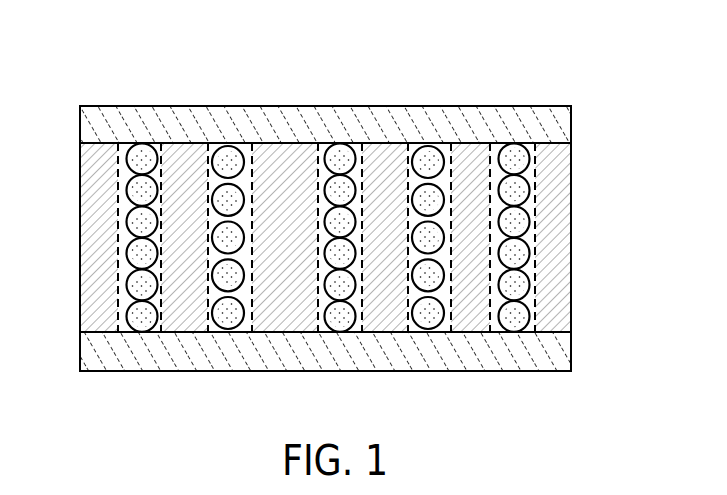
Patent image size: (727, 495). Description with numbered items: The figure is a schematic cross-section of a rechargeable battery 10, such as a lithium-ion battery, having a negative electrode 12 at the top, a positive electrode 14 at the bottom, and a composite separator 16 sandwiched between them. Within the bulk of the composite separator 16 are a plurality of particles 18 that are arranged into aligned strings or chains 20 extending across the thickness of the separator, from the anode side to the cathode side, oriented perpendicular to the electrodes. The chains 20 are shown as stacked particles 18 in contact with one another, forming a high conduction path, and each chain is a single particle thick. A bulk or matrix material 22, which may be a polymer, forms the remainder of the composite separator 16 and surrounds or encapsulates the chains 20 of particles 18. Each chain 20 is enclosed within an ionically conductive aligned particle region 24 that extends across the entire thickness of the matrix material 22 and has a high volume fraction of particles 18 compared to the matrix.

The rechargeable battery 10 is at (323, 70).
The negative electrode 12 is at (543, 105).
The positive electrode 14 is at (537, 372).
The composite separator 16 is at (572, 228).
The particles 18 is at (132, 222).
The chains 20 is at (215, 268).
The matrix material 22 is at (556, 300).
The aligned particle regions 24 is at (528, 178).